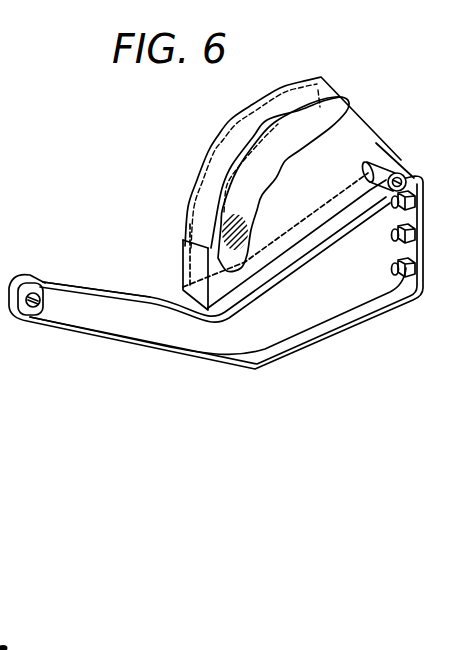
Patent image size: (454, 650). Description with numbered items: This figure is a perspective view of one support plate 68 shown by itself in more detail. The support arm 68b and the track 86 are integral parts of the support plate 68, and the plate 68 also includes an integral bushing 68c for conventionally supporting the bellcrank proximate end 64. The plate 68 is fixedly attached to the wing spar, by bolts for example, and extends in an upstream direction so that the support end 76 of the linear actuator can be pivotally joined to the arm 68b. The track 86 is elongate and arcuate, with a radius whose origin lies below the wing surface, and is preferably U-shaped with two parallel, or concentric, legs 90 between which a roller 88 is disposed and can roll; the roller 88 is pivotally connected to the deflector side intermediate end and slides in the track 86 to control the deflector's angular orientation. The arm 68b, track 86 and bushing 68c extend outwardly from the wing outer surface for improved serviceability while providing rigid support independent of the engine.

The support plate 68 is at (137, 352).
The support arm 68b is at (110, 297).
The bushing 68c is at (378, 158).
The bellcrank proximate end 64 is at (430, 176).
The support end 76 is at (39, 309).
The track 86 is at (327, 68).
The roller 88 is at (243, 233).
The legs 90 is at (197, 205).